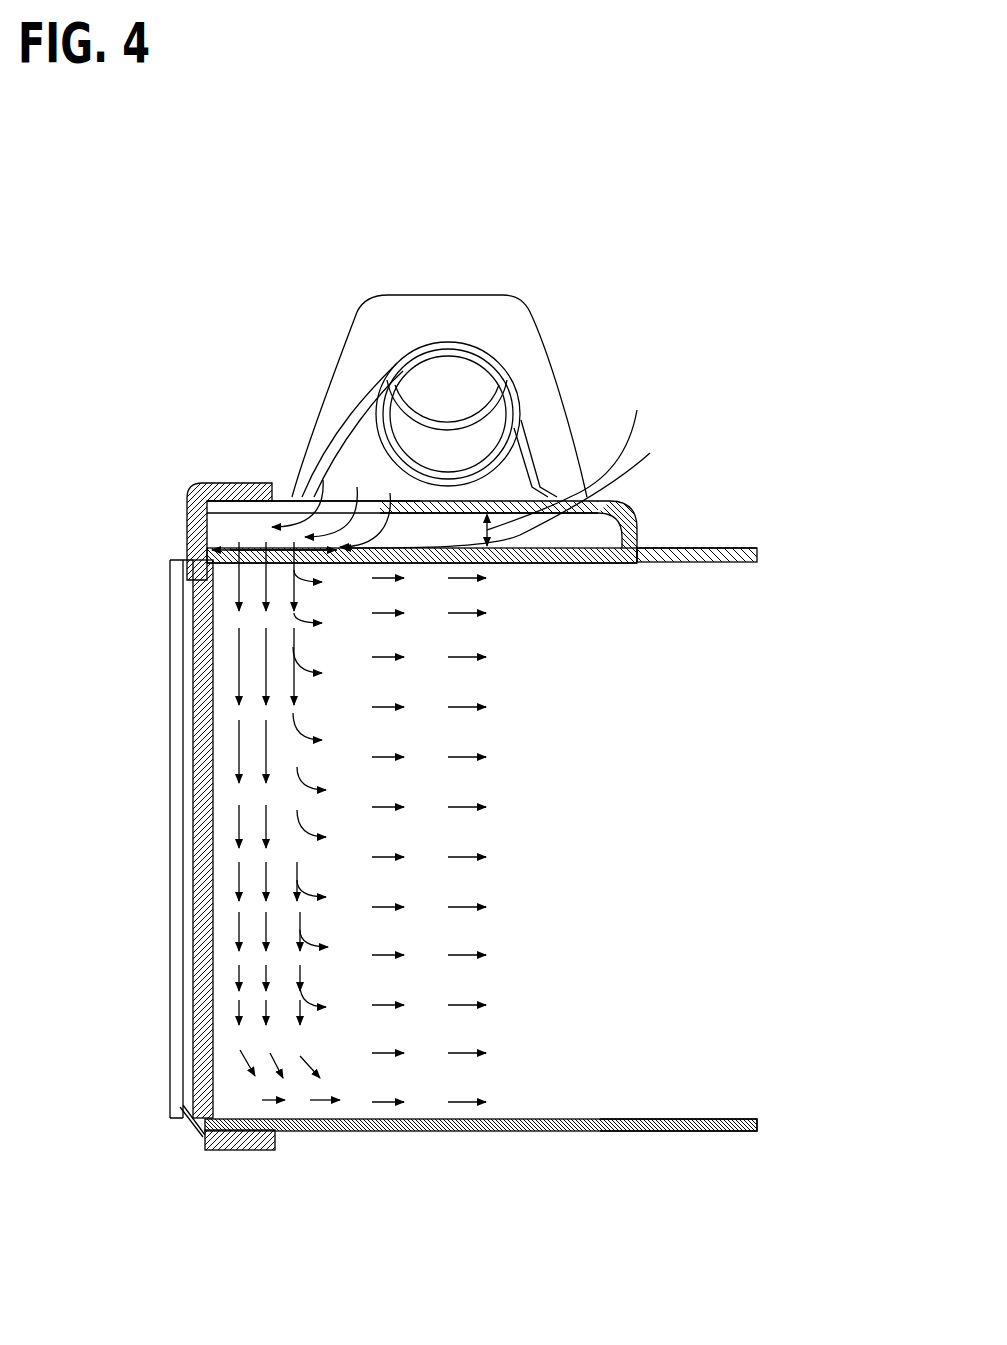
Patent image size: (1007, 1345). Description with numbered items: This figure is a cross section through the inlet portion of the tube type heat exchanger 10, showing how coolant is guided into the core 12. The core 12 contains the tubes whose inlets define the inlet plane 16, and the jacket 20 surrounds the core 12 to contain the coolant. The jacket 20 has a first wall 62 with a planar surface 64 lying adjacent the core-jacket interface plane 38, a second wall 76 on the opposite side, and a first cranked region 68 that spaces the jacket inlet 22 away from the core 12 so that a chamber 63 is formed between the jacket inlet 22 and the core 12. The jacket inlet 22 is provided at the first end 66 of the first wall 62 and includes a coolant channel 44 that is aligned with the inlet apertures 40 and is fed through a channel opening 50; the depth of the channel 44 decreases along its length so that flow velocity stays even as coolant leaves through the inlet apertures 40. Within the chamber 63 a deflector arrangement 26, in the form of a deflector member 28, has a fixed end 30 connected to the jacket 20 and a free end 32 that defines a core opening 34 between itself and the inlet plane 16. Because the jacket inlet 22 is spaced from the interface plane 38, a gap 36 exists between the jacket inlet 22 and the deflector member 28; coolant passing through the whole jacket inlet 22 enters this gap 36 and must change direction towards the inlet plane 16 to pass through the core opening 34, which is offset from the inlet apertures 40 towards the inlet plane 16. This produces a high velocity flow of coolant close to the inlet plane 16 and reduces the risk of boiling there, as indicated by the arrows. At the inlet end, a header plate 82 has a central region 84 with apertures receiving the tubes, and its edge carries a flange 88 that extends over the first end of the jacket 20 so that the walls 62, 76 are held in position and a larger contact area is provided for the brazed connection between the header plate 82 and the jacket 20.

The heat exchanger 10 is at (742, 242).
The core 12 is at (538, 1075).
The inlet plane 16 is at (168, 606).
The jacket 20 is at (697, 1137).
The jacket inlet 22 is at (371, 327).
The deflector arrangement 26 is at (576, 545).
The deflector member 28 is at (550, 557).
The fixed end 30 is at (646, 562).
The free end 32 is at (568, 455).
The core opening 34 is at (246, 506).
The gap 36 is at (509, 486).
The core-jacket interface plane 38 is at (629, 567).
The inlet apertures 40 is at (322, 510).
The coolant channel 44 is at (531, 331).
The channel opening 50 is at (447, 385).
The first wall 62 is at (748, 548).
The chamber 63 is at (588, 534).
The planar surface 64 is at (723, 556).
The first end 66 is at (230, 552).
The first cranked region 68 is at (272, 508).
The second wall 76 is at (433, 1131).
The header plate 82 is at (202, 1135).
The central region 84 is at (205, 826).
The flange 88 is at (250, 1148).